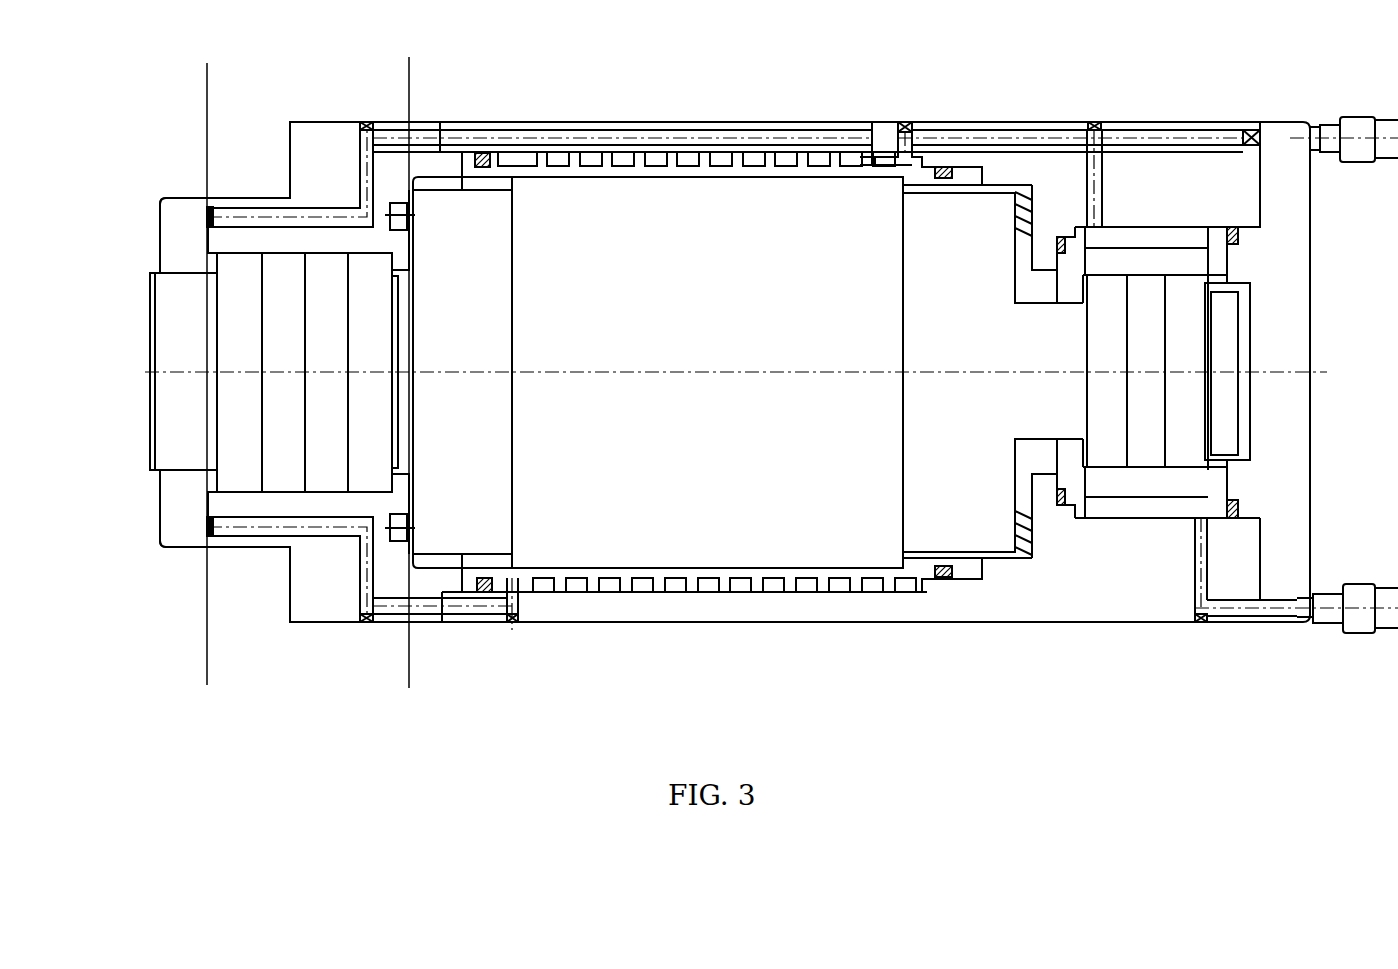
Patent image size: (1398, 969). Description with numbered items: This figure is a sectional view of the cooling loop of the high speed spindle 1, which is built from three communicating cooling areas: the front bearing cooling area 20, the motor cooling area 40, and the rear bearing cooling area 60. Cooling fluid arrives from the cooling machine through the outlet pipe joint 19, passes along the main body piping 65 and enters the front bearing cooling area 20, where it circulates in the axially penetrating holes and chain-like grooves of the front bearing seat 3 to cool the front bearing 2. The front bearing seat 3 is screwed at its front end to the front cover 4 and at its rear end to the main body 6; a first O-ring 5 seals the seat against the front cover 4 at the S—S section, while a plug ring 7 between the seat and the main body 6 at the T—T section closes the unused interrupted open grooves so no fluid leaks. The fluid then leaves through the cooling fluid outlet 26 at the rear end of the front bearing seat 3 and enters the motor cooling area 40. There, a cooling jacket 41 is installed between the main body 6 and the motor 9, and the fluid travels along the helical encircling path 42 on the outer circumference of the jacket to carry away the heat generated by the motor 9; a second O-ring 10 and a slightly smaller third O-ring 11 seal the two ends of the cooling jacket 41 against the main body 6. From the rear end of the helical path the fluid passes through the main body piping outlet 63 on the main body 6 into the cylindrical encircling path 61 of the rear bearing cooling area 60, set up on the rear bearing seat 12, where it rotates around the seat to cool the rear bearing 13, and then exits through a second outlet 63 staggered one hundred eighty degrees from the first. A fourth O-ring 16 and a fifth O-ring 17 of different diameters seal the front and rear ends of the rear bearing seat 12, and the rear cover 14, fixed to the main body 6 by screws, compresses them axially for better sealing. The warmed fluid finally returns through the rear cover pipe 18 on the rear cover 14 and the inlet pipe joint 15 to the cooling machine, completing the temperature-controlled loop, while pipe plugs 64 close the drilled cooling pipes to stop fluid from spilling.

The high speed spindle 1 is at (688, 100).
The front bearing 2 is at (240, 330).
The front bearing seat 3 is at (313, 148).
The front cover 4 is at (172, 235).
The first O-ring 5 is at (210, 538).
The main body 6 is at (1025, 160).
The plug ring 7 is at (395, 203).
The motor 9 is at (778, 540).
The second O-ring 10 is at (485, 150).
The third O-ring 11 is at (942, 165).
The rear bearing seat 12 is at (1210, 262).
The rear bearing 13 is at (1190, 348).
The rear cover 14 is at (1295, 213).
The inlet pipe joint 15 is at (1357, 590).
The fourth O-ring 16 is at (1063, 508).
The fifth O-ring 17 is at (1242, 507).
The rear cover pipe 18 is at (1280, 618).
The outlet pipe joint 19 is at (1358, 118).
The front bearing cooling area 20 is at (252, 186).
The cooling fluid outlet 26 is at (490, 616).
The motor cooling area 40 is at (792, 108).
The cooling jacket 41 is at (612, 166).
The helical encircling path 42 is at (720, 158).
The rear bearing cooling area 60 is at (1180, 208).
The cylindrical encircling path 61 is at (1140, 237).
The main body piping outlet 63 is at (1195, 573).
The pipe plug 64 is at (365, 122).
The main body piping 65 is at (852, 135).